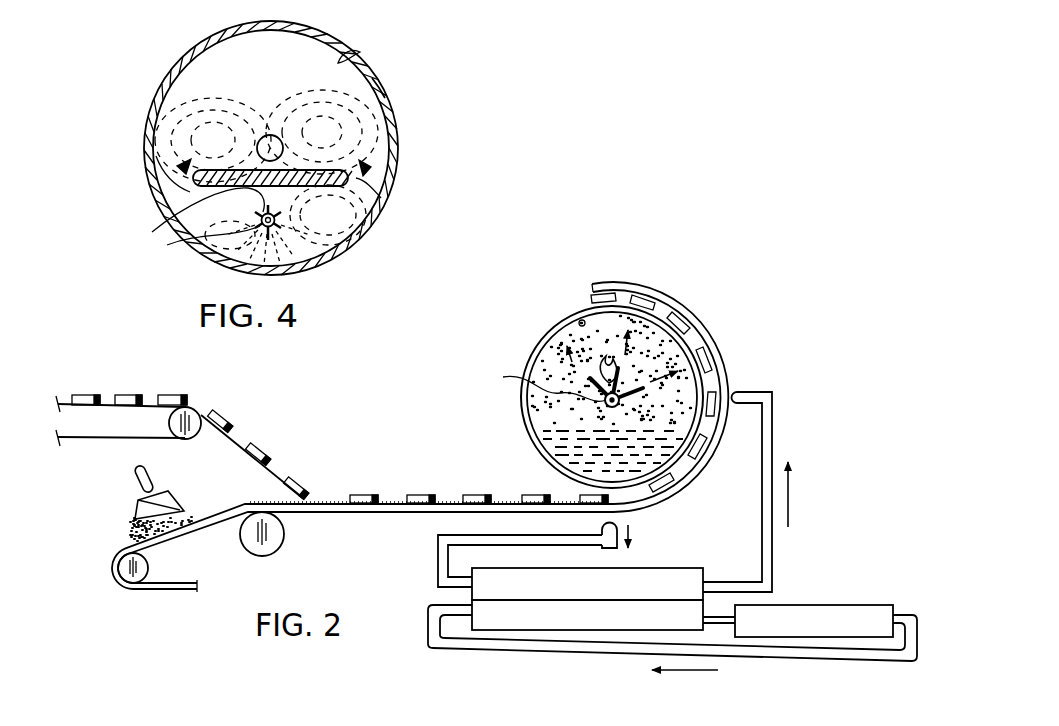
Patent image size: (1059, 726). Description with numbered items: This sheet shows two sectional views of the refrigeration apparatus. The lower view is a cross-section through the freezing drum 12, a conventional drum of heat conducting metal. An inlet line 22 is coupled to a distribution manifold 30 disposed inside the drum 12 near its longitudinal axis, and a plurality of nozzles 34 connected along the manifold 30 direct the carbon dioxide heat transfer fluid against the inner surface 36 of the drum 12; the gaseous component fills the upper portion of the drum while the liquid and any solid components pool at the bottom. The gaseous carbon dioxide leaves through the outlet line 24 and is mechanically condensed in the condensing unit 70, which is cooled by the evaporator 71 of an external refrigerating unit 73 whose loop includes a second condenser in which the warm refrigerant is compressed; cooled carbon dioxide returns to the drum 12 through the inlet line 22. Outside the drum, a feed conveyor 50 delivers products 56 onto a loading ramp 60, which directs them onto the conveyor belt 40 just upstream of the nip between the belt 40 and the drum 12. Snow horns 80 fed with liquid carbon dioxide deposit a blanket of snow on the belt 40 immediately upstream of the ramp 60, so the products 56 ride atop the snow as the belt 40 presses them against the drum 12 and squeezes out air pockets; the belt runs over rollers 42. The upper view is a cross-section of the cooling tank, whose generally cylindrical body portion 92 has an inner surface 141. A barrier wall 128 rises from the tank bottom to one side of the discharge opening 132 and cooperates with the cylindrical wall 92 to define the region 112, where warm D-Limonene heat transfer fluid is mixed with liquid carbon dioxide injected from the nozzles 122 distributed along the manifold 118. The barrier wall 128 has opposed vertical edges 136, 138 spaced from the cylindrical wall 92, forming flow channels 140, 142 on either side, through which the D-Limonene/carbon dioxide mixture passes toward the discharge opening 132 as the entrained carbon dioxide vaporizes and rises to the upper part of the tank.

In FIG. 2, the freezing drum 12 is at (525, 440).
In FIG. 2, the inlet line 22 is at (753, 388).
In FIG. 2, the outlet line 24 is at (607, 550).
In FIG. 2, the distribution manifold 30 is at (541, 384).
In FIG. 2, the nozzles 34 is at (622, 368).
In FIG. 2, the inner surface 36 is at (580, 320).
In FIG. 2, the conveyor belt 40 is at (193, 537).
In FIG. 2, the belt rollers 42 is at (267, 543).
In FIG. 2, the feed conveyor 50 is at (108, 402).
In FIG. 2, the products 56 is at (163, 400).
In FIG. 2, the loading ramp 60 is at (238, 445).
In FIG. 2, the condensing unit 70 is at (693, 568).
In FIG. 2, the evaporator 71 is at (470, 602).
In FIG. 2, the external refrigerating unit 73 is at (830, 605).
In FIG. 2, the snow horns 80 is at (135, 505).
In FIG. 4, the cylindrical body portion 92 is at (378, 90).
In FIG. 4, the region 112 is at (271, 155).
In FIG. 4, the manifold 118 is at (237, 262).
In FIG. 4, the nozzles 122 is at (170, 238).
In FIG. 4, the barrier wall 128 is at (292, 170).
In FIG. 4, the discharge opening 132 is at (262, 137).
In FIG. 4, the vertical edge 136 is at (202, 170).
In FIG. 4, the vertical edge 138 is at (363, 173).
In FIG. 4, the flow channel 140 is at (153, 155).
In FIG. 4, the inner surface 141 is at (338, 62).
In FIG. 4, the flow channel 142 is at (378, 198).